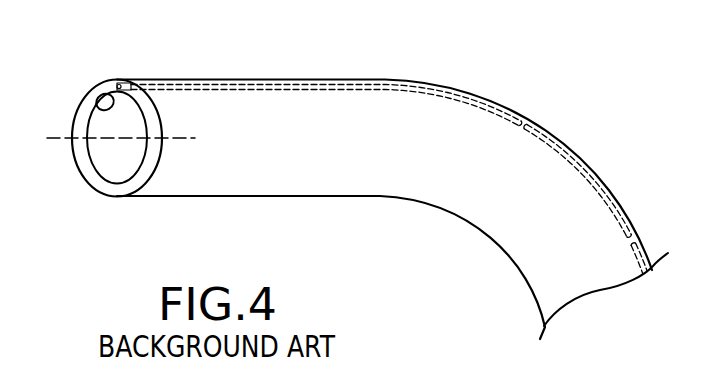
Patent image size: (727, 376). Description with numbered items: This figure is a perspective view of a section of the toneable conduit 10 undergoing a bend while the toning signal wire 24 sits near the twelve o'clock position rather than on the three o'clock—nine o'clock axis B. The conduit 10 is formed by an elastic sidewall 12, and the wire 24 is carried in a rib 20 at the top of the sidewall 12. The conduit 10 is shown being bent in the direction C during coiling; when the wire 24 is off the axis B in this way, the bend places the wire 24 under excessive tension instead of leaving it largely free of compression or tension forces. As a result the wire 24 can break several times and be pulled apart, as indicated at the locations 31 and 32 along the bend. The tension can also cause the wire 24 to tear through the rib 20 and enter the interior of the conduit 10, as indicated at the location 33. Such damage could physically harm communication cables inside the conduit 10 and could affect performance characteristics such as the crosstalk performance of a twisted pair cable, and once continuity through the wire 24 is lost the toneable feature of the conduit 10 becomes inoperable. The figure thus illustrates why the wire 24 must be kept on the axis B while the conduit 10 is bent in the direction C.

The toneable conduit 10 is at (279, 198).
The sidewall 12 is at (139, 182).
The rib 20 is at (97, 94).
The wire 24 is at (117, 80).
The location 31 is at (534, 113).
The location 32 is at (641, 218).
The location 33 is at (597, 176).
The three o'clock—nine o'clock axis B is at (51, 130).
The direction C is at (435, 240).